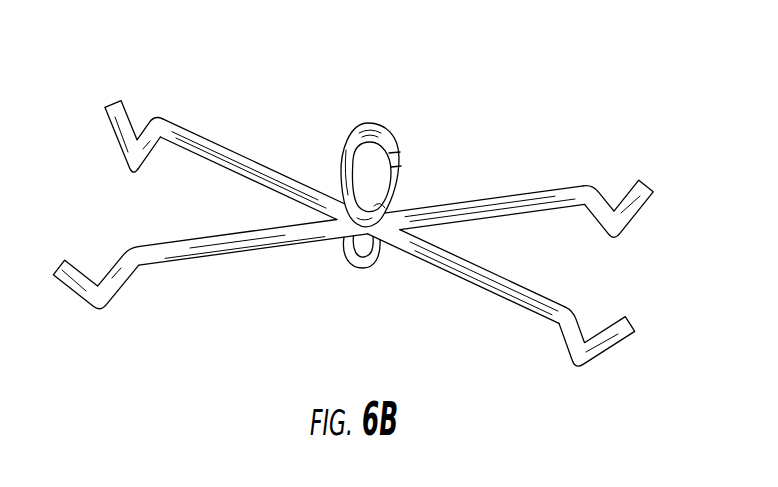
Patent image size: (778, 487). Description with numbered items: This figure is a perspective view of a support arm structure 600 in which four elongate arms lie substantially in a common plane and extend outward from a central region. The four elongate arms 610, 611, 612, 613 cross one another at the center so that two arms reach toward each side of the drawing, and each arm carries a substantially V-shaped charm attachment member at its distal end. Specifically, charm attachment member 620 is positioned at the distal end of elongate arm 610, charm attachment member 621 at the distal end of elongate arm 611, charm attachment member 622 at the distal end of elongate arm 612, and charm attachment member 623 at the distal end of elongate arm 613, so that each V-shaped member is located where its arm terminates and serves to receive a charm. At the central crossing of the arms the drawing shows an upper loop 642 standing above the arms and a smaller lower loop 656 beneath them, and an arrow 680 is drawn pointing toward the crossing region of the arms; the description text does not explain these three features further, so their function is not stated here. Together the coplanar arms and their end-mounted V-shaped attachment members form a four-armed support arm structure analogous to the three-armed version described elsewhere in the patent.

The support arm structure 600 is at (508, 81).
The elongate arm 610 is at (278, 245).
The elongate arm 611 is at (232, 152).
The elongate arm 612 is at (470, 201).
The elongate arm 613 is at (485, 278).
The V-shaped charm attachment member 620 is at (78, 278).
The V-shaped charm attachment member 621 is at (117, 99).
The V-shaped charm attachment member 622 is at (648, 183).
The V-shaped charm attachment member 623 is at (624, 341).
The upper loop ring 642 is at (367, 120).
The lower loop 656 is at (372, 266).
The direction of insertion 680 is at (294, 211).